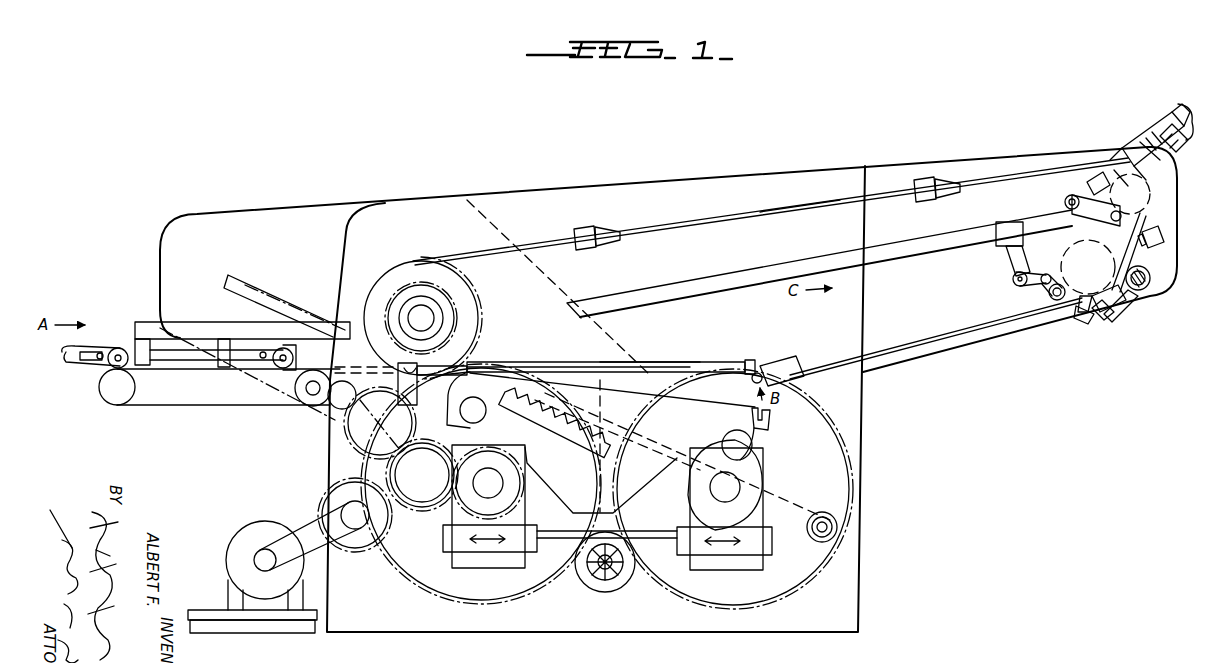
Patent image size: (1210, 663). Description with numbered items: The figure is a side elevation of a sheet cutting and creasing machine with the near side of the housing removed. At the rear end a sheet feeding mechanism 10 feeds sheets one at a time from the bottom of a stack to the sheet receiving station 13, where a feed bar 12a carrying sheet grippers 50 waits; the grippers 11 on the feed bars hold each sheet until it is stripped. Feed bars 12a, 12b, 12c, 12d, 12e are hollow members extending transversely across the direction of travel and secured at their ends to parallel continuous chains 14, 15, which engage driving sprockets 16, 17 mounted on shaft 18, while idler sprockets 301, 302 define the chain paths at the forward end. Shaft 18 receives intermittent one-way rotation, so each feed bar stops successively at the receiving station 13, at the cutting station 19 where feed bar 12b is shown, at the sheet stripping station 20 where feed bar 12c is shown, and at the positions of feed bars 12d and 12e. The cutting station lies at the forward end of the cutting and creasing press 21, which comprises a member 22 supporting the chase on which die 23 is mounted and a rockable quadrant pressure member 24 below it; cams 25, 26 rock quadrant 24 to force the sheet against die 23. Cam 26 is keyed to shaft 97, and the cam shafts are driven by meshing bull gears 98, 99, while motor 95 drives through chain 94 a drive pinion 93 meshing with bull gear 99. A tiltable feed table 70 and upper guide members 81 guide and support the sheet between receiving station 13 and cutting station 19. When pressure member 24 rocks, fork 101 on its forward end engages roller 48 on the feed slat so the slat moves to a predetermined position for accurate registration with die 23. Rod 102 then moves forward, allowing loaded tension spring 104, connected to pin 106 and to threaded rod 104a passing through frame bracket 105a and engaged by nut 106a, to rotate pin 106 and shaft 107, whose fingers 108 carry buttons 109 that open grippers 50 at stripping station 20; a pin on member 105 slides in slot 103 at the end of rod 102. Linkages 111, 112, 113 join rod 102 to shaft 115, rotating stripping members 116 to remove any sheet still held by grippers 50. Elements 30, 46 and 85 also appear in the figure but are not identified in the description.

The sheet feeding mechanism 10 is at (95, 272).
The grippers 11 is at (602, 222).
The feed bar 12a is at (458, 354).
The feed bar 12b is at (795, 368).
The feed bar 12c is at (1102, 292).
The feed bar 12d is at (927, 200).
The feed bar 12e is at (590, 246).
The sheet receiving station 13 is at (405, 200).
The continuous chain 14 is at (750, 226).
The continuous chain 15 is at (802, 216).
The driving sprocket 16 is at (394, 272).
The driving sprocket 17 is at (418, 262).
The shaft 18 is at (421, 318).
The cutting station 19 is at (707, 176).
The sheet stripping station 20 is at (1094, 150).
The cutting and creasing press 21 is at (652, 357).
The die support member 22 is at (712, 364).
The die 23 is at (595, 368).
The rockable quadrant pressure member 24 is at (622, 416).
The cam 25 is at (672, 508).
The cam 26 is at (462, 432).
The guide block 30 is at (412, 395).
The motor 46 is at (722, 498).
The roller 48 is at (758, 372).
The sheet grippers 50 is at (1084, 322).
The tiltable feed table 70 is at (341, 389).
The upper guide members 81 is at (368, 368).
The conveyor 85 is at (258, 405).
The drive pinion 93 is at (352, 540).
The chain 94 is at (312, 516).
The motor 95 is at (252, 524).
The shaft 97 is at (502, 478).
The bull gear 98 is at (662, 600).
The bull gear 99 is at (520, 598).
The fork 101 is at (772, 420).
The rod 102 is at (818, 258).
The slot 103 is at (1068, 214).
The tension spring 104 is at (1142, 140).
The threaded rod 104a is at (1170, 118).
The member 105 is at (1142, 248).
The frame bracket 105a is at (1178, 104).
The pin 106 is at (1064, 203).
The nut 106a is at (1181, 144).
The shaft 107 is at (1146, 290).
The fingers 108 is at (1132, 312).
The button 109 is at (1106, 316).
The linkage 111 is at (1006, 256).
The linkage 112 is at (1040, 275).
The linkage 113 is at (1050, 290).
The shaft 115 is at (1060, 302).
The stripping members 116 is at (1070, 316).
The idler sprocket 301 is at (1082, 255).
The idler sprocket 302 is at (1130, 194).